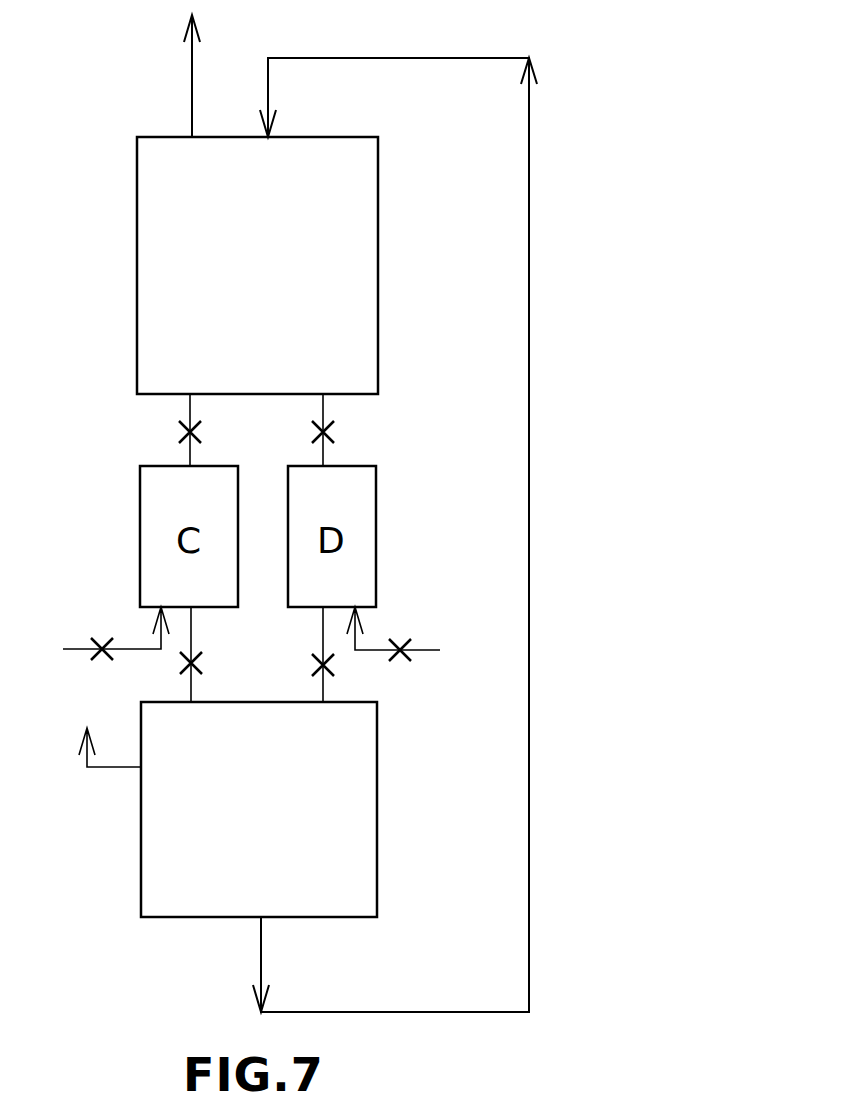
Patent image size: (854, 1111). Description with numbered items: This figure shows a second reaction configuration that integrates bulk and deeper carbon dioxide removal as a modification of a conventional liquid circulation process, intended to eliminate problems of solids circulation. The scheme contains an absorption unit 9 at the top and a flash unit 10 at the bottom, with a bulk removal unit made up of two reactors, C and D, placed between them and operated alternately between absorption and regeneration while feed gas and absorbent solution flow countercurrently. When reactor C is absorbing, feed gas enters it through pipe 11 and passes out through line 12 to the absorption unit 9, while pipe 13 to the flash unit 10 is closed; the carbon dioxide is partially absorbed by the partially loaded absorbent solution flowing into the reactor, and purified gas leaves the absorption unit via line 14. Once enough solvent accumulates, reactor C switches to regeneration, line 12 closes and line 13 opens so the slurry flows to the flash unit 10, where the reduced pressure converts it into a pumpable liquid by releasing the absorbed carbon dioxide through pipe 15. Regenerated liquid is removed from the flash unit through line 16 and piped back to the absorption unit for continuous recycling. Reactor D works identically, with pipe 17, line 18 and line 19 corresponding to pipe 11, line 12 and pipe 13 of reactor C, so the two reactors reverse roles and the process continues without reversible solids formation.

The absorption unit 9 is at (257, 265).
The flash unit 10 is at (259, 809).
The pipe 11 is at (80, 649).
The line 12 is at (190, 452).
The pipe 13 is at (191, 642).
The line 14 is at (192, 100).
The pipe 15 is at (87, 767).
The line 16 is at (408, 1012).
The pipe 17 is at (422, 650).
The line 18 is at (323, 452).
The line 19 is at (323, 685).